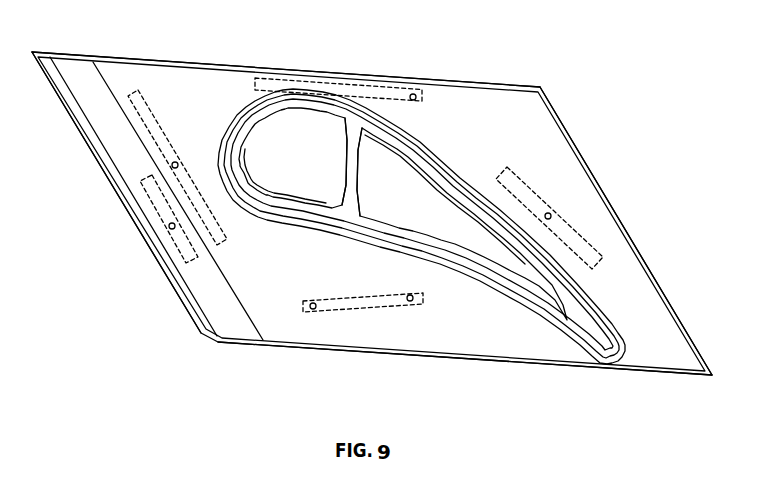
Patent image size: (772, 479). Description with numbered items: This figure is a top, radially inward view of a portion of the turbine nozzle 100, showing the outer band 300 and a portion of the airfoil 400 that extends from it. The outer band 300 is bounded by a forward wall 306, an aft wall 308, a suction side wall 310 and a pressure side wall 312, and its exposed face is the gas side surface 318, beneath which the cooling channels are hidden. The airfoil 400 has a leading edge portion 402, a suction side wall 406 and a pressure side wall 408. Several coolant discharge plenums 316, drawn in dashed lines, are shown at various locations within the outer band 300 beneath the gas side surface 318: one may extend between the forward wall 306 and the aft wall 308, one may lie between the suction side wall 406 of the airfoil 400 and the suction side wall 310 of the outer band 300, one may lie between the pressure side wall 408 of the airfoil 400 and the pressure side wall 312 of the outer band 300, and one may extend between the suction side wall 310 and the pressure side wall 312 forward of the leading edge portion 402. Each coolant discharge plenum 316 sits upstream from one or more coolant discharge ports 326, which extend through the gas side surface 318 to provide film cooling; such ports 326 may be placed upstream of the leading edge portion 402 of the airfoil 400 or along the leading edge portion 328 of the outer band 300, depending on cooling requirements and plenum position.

The turbine nozzle 100 is at (532, 51).
The outer band 300 is at (536, 105).
The forward wall 306 is at (132, 237).
The aft wall 308 is at (648, 262).
The suction side wall 310 is at (238, 65).
The pressure side wall 312 is at (472, 364).
The coolant discharge plenum 316 is at (400, 78).
The gas side surface 318 is at (288, 334).
The coolant discharge port 326 is at (416, 99).
The leading edge portion 328 is at (223, 320).
The airfoil 400 is at (508, 300).
The leading edge portion 402 is at (221, 190).
The suction side wall 406 is at (446, 170).
The pressure side wall 408 is at (358, 228).